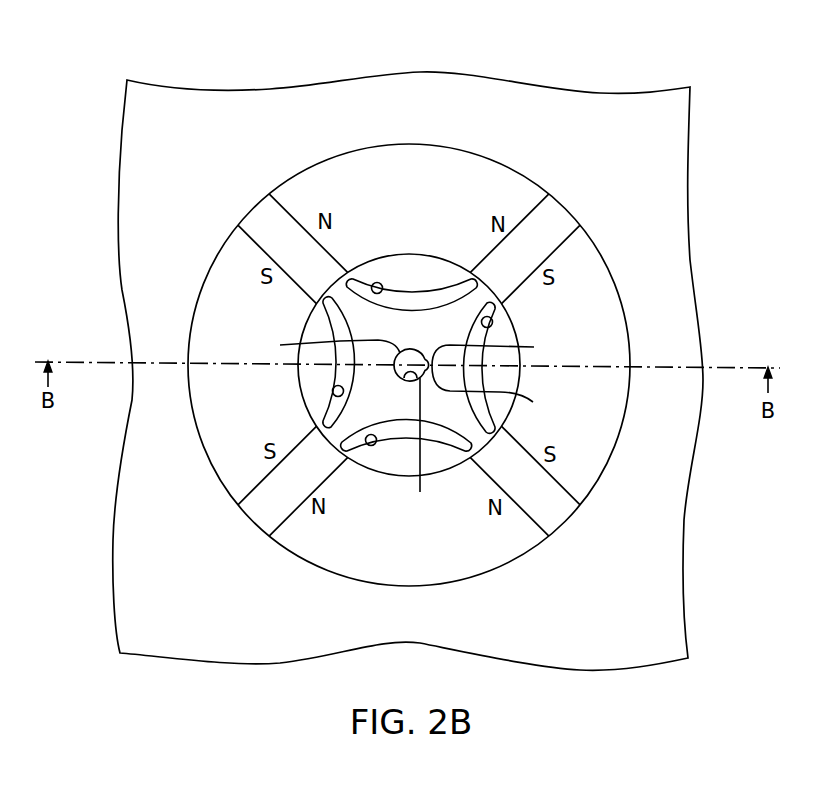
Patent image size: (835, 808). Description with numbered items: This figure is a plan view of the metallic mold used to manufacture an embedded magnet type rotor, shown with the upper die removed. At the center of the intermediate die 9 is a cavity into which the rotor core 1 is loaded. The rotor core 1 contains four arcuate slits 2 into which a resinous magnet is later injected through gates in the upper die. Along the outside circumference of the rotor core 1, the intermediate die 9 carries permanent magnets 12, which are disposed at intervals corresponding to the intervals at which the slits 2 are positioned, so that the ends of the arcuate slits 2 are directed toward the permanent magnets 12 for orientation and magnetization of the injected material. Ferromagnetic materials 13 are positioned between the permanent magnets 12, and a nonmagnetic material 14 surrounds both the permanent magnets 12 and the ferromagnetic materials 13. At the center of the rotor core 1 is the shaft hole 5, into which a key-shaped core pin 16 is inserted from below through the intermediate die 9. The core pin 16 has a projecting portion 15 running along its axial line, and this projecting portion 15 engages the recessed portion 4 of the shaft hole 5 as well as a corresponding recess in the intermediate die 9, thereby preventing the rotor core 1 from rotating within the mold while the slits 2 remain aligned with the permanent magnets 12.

The rotor core 1 is at (440, 274).
The slits 2 is at (376, 283).
The recessed portion 4 is at (491, 351).
The shaft hole 5 is at (424, 448).
The intermediate die 9 is at (605, 70).
The permanent magnets 12 is at (270, 222).
The ferromagnetic materials 13 is at (437, 167).
The nonmagnetic material 14 is at (666, 247).
The projecting portion 15 is at (494, 391).
The core pin 16 is at (327, 346).